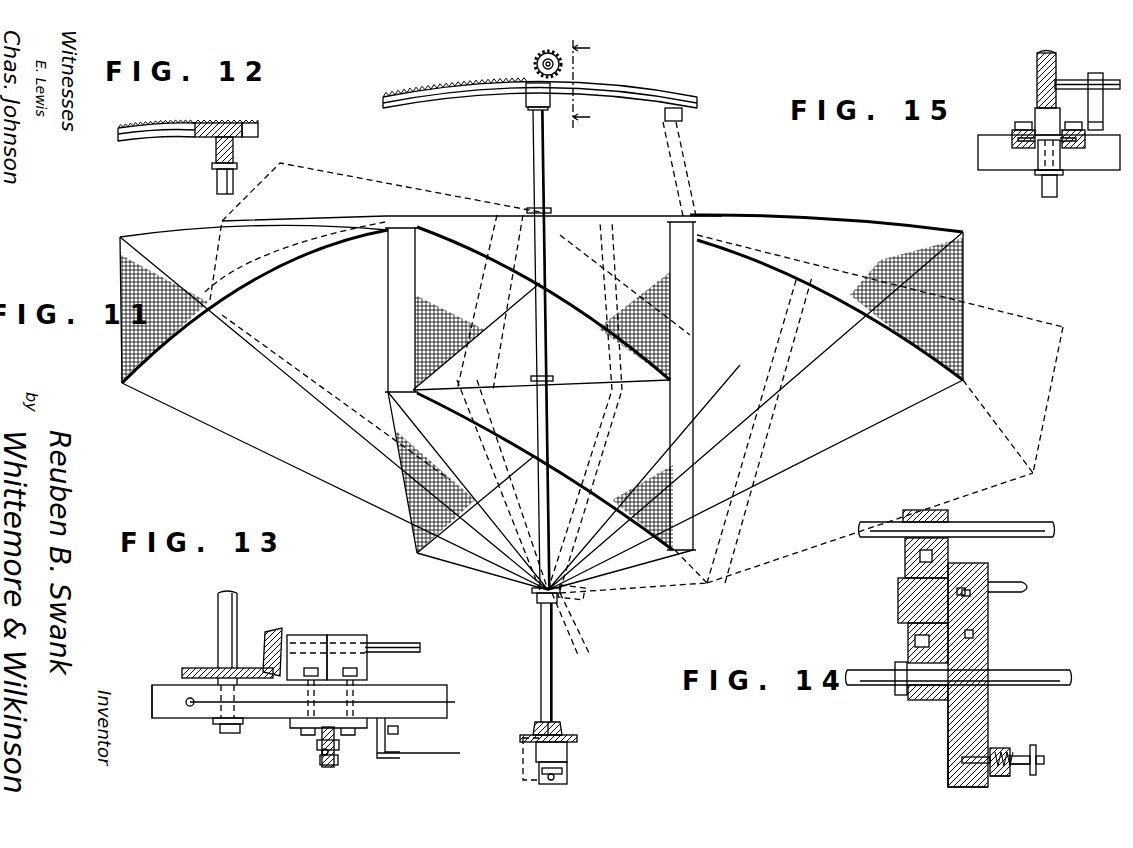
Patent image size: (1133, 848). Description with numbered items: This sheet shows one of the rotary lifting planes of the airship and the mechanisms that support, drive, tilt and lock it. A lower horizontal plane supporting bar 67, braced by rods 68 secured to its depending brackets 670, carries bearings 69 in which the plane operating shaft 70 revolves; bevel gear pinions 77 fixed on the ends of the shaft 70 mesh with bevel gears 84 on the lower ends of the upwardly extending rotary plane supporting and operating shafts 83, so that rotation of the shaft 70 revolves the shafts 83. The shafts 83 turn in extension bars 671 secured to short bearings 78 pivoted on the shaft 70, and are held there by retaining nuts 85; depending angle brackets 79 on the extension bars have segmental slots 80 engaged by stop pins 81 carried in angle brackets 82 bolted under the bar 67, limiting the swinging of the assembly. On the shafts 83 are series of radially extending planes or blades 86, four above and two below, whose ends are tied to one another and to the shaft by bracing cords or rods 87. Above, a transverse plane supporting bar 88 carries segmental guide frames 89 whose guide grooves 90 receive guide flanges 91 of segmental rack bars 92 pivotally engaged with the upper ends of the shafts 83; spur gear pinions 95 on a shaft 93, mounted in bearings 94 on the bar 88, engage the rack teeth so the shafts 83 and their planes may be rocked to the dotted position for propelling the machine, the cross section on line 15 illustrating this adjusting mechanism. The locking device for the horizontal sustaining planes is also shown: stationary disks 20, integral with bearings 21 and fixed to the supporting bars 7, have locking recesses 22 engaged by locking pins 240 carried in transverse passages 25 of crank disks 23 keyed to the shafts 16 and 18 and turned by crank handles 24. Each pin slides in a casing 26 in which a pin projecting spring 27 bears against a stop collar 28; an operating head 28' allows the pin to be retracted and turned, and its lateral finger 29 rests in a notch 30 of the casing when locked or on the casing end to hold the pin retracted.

In FIG. 14, the plane supporting bars 7 is at (896, 609).
In FIG. 11, the spur gears 15 is at (577, 87).
In FIG. 14, the shaft 16 is at (1007, 523).
In FIG. 14, the shaft 18 is at (1062, 672).
In FIG. 14, the stationary disks or plates 20 is at (950, 738).
In FIG. 14, the bearings 21 is at (925, 512).
In FIG. 14, the locking notches or recesses 22 is at (956, 762).
In FIG. 14, the crank disks or plates 23 is at (987, 642).
In FIG. 14, the crank handles 24 is at (1030, 587).
In FIG. 14, the transverse passages 25 is at (990, 745).
In FIG. 14, the casings 26 is at (1027, 747).
In FIG. 14, the pin projecting springs 27 is at (1002, 776).
In FIG. 14, the stop collars 28 is at (1018, 744).
In FIG. 14, the operating heads or handles 28' is at (1064, 751).
In FIG. 14, the laterally extending fingers 29 is at (1044, 762).
In FIG. 14, the notches 30 is at (1022, 770).
In FIG. 11, the lower plane supporting bar 67 is at (568, 753).
In FIG. 13, the lower plane supporting bar 67 is at (458, 692).
In FIG. 13, the rods 68 is at (420, 753).
In FIG. 13, the bearings 69 is at (355, 640).
In FIG. 11, the plane operating shaft 70 is at (562, 726).
In FIG. 13, the plane operating shaft 70 is at (410, 645).
In FIG. 11, the bevel gear pinions 77 is at (538, 728).
In FIG. 13, the bevel gear pinions 77 is at (272, 630).
In FIG. 13, the short bearings 78 is at (312, 636).
In FIG. 11, the depending angle brackets 79 is at (568, 775).
In FIG. 13, the depending angle brackets 79 is at (318, 735).
In FIG. 11, the segmental slots 80 is at (540, 783).
In FIG. 13, the segmental slots 80 is at (325, 770).
In FIG. 11, the stop pins 81 is at (553, 780).
In FIG. 13, the stop pins 81 is at (318, 756).
In FIG. 13, the angle brackets 82 is at (337, 762).
In FIG. 11, the rotary plane supporting and operating shafts 83 is at (552, 646).
In FIG. 12, the rotary plane supporting and operating shafts 83 is at (218, 181).
In FIG. 13, the rotary plane supporting and operating shafts 83 is at (226, 622).
In FIG. 15, the rotary plane supporting and operating shafts 83 is at (1049, 198).
In FIG. 11, the bevel gears 84 is at (578, 738).
In FIG. 13, the bevel gears 84 is at (184, 669).
In FIG. 13, the retaining nuts 85 is at (222, 736).
In FIG. 11, the planes or blades 86 is at (591, 378).
In FIG. 11, the bracing cords or rods 87 is at (852, 440).
In FIG. 11, the plane supporting bar 88 is at (527, 106).
In FIG. 15, the plane supporting bar 88 is at (985, 157).
In FIG. 11, the segmental guide frames 89 is at (633, 94).
In FIG. 15, the segmental guide frames 89 is at (1076, 150).
In FIG. 15, the guide grooves 90 is at (1073, 150).
In FIG. 11, the guide flanges 91 is at (446, 101).
In FIG. 12, the guide flanges 91 is at (143, 149).
In FIG. 15, the guide flanges 91 is at (1032, 153).
In FIG. 11, the segmental rack bars 92 is at (425, 89).
In FIG. 12, the segmental rack bars 92 is at (170, 122).
In FIG. 15, the segmental rack bars 92 is at (1043, 122).
In FIG. 11, the shaft 93 is at (543, 56).
In FIG. 15, the shaft 93 is at (1057, 55).
In FIG. 15, the bearings 94 is at (1103, 72).
In FIG. 11, the spur gear pinions 95 is at (533, 65).
In FIG. 15, the spur gear pinions 95 is at (1038, 55).
In FIG. 14, the locking pins 240 is at (950, 775).
In FIG. 13, the depending brackets 670 is at (378, 744).
In FIG. 13, the extension bars 671 is at (178, 716).